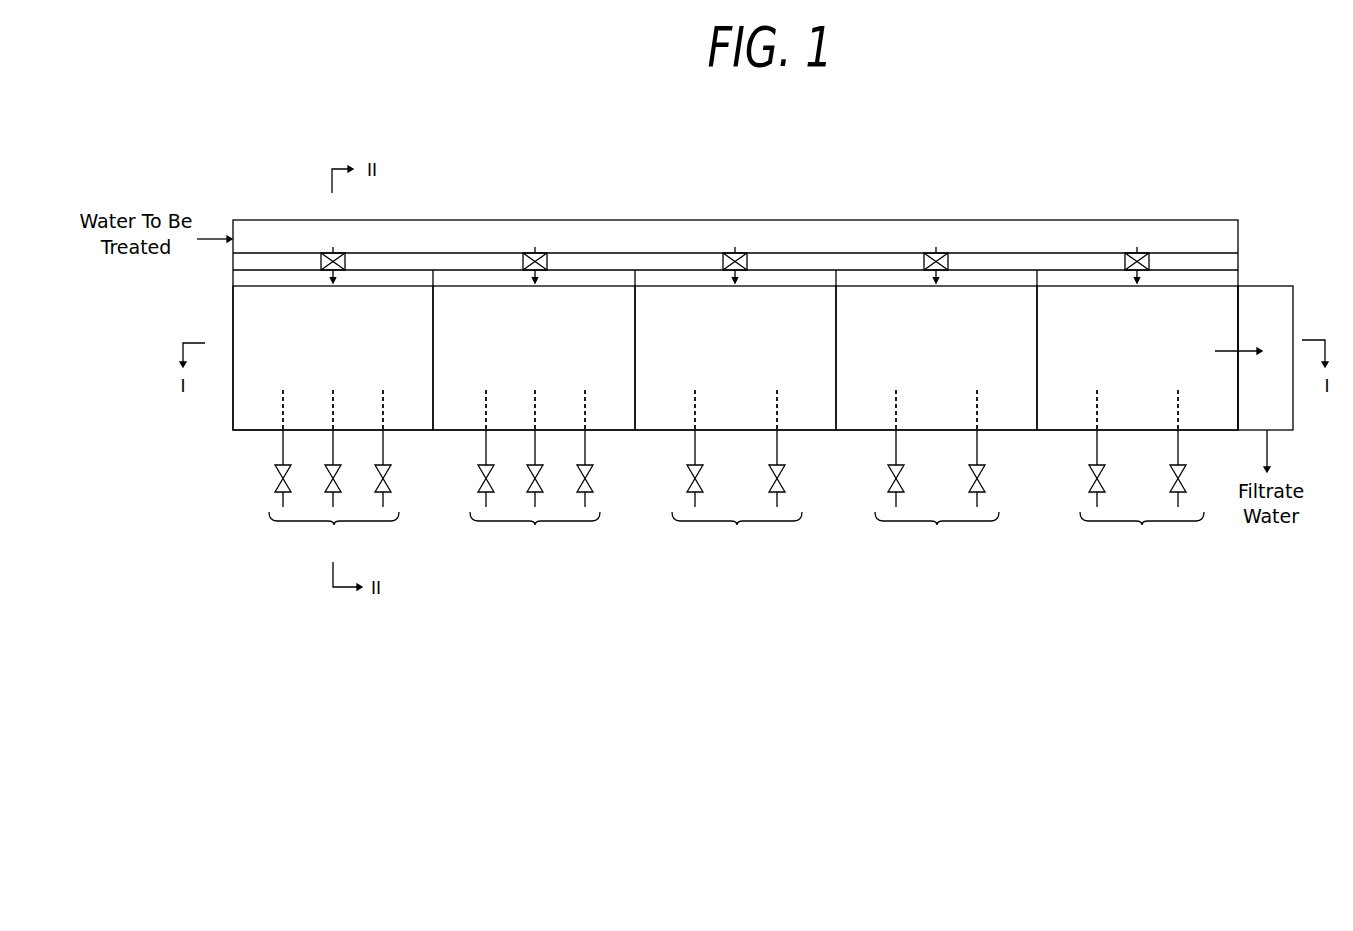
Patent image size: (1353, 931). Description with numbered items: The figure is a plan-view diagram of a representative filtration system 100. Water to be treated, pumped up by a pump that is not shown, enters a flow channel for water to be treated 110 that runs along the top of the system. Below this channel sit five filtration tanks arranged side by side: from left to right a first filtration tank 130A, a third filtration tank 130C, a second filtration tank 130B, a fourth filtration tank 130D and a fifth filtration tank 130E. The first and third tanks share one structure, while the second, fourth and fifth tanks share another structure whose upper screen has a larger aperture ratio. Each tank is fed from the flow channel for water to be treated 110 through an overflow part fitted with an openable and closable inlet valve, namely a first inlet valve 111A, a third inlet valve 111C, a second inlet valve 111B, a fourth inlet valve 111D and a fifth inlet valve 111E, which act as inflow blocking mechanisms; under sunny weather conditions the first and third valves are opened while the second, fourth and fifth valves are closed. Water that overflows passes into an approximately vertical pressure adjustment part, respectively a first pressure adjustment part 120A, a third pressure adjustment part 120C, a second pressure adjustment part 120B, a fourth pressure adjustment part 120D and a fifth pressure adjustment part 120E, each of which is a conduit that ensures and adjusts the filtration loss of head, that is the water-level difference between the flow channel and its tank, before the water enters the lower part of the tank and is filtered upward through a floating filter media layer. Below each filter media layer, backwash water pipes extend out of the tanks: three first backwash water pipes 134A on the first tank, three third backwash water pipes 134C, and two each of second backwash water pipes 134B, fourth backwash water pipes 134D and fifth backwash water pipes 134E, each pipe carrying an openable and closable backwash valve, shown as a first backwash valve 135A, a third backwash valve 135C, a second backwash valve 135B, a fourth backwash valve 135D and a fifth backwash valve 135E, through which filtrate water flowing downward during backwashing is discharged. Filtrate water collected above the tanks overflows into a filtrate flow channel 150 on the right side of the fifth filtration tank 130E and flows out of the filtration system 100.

The filtration system 100 is at (955, 140).
The flow channel for water to be treated 110 is at (418, 237).
The first inlet valve 111A is at (327, 253).
The second inlet valve 111B is at (728, 253).
The third inlet valve 111C is at (530, 253).
The fourth inlet valve 111D is at (929, 253).
The fifth inlet valve 111E is at (1130, 253).
The first pressure adjustment part 120A is at (260, 280).
The second pressure adjustment part 120B is at (790, 280).
The third pressure adjustment part 120C is at (568, 280).
The fourth pressure adjustment part 120D is at (988, 280).
The fifth pressure adjustment part 120E is at (1187, 280).
The first filtration tank 130A is at (264, 372).
The second filtration tank 130B is at (665, 374).
The third filtration tank 130C is at (459, 372).
The fourth filtration tank 130D is at (865, 374).
The fifth filtration tank 130E is at (1066, 374).
The first backwash water pipes 134A is at (365, 478).
The second backwash water pipes 134B is at (767, 478).
The third backwash water pipes 134C is at (565, 478).
The fourth backwash water pipes 134D is at (970, 478).
The fifth backwash water pipes 134E is at (1174, 478).
The first backwash valve 135A is at (388, 493).
The second backwash valve 135B is at (782, 493).
The third backwash valve 135C is at (590, 493).
The fourth backwash valve 135D is at (982, 493).
The fifth backwash valve 135E is at (1183, 493).
The filtrate flow channel 150 is at (1263, 312).